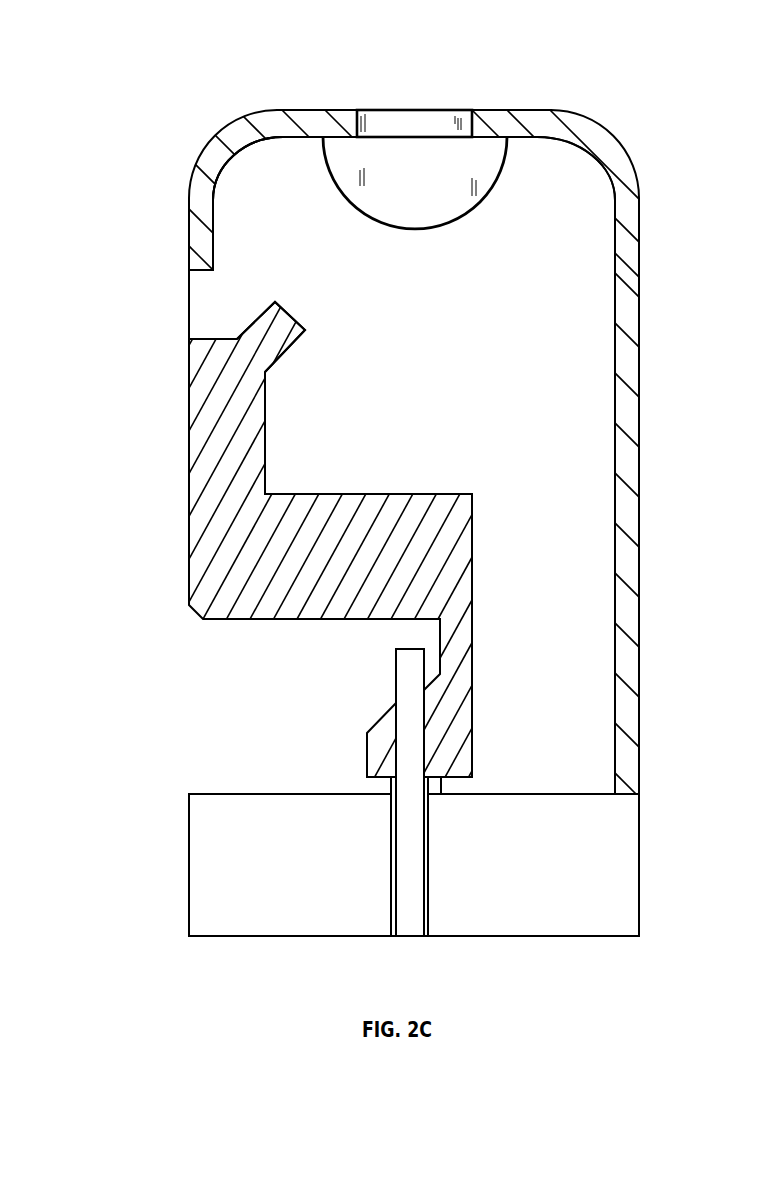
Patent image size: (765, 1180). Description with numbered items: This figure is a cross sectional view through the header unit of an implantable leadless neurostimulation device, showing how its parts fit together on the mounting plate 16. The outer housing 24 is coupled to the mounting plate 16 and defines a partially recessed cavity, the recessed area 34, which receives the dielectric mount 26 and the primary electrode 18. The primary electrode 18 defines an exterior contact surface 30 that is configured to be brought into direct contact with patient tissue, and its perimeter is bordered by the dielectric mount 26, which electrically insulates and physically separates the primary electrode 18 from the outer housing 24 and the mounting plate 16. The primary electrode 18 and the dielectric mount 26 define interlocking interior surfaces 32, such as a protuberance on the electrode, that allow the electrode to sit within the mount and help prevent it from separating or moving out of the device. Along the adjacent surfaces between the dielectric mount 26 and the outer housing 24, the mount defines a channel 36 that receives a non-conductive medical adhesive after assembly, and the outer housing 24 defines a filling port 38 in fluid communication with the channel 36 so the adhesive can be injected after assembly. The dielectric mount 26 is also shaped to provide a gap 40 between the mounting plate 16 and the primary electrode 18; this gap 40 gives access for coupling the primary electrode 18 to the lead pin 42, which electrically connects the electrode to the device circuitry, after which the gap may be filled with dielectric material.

The mounting plate 16 is at (227, 868).
The primary electrode 18 is at (202, 503).
The outer housing 24 is at (218, 159).
The dielectric mount 26 is at (441, 348).
The exterior contact surface 30 is at (178, 419).
The interlocking interior surfaces 32 is at (273, 290).
The recessed area 34 is at (253, 157).
The channel 36 is at (431, 194).
The filling port 38 is at (416, 118).
The gap 40 is at (208, 730).
The lead pin 42 is at (405, 682).